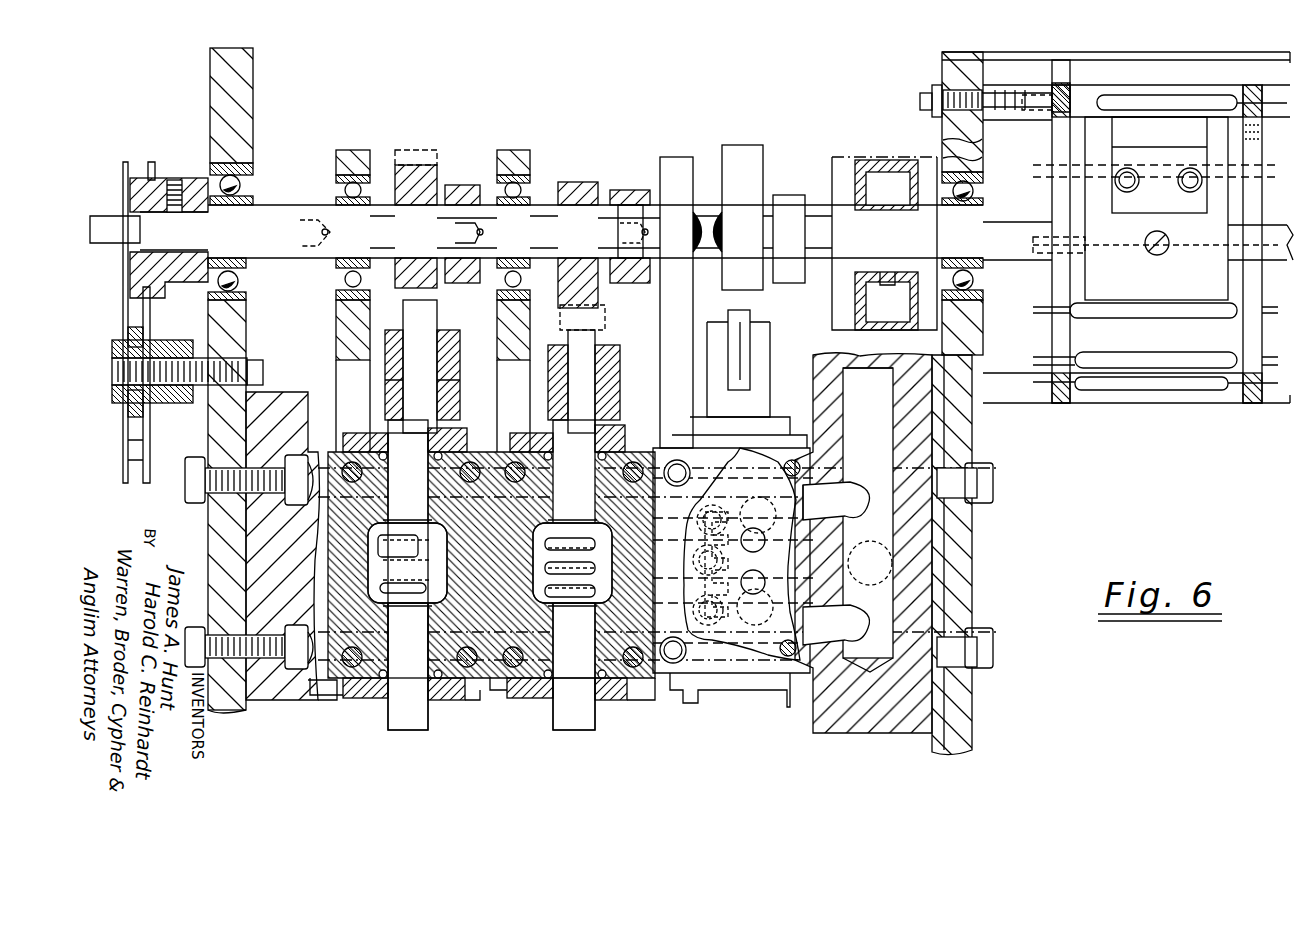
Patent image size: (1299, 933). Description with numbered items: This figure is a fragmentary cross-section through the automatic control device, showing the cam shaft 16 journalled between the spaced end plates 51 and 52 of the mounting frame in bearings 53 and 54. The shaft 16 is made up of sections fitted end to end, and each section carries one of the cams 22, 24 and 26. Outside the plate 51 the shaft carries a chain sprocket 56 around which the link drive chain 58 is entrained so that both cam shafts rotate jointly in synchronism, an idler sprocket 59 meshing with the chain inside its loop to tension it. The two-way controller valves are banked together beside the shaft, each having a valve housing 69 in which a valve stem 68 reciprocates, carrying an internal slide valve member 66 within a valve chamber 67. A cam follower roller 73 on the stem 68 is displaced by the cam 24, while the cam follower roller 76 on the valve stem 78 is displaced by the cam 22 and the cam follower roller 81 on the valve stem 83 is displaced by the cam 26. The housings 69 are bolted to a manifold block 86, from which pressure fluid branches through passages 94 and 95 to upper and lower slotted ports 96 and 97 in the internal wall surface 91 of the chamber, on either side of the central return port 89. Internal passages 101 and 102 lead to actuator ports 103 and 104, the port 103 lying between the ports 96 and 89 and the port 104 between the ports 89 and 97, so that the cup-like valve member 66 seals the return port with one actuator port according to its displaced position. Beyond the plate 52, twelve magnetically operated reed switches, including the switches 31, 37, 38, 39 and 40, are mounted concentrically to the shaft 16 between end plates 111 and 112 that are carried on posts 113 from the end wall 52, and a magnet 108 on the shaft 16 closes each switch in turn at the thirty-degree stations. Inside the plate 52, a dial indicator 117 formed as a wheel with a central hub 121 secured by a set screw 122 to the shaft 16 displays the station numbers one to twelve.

The cam shaft 16 is at (296, 202).
The cam 22 is at (425, 185).
The cam 24 is at (575, 182).
The cam 26 is at (755, 182).
The magnetic reed switch 31 is at (1140, 95).
The magnetic reed switch 37 is at (1200, 395).
The magnetic reed switch 38 is at (1153, 352).
The magnetic reed switch 39 is at (1110, 318).
The magnetic reed switch 40 is at (1150, 258).
The end plate 51 is at (210, 68).
The end plate 52 is at (945, 78).
The bearing 53 is at (243, 185).
The bearing 54 is at (975, 192).
The chain sprocket 56 is at (163, 178).
The link drive chain 58 is at (122, 466).
The idler sprocket 59 is at (112, 392).
The slide valve member 66 is at (405, 535).
The valve chamber 67 is at (425, 608).
The valve stem 68 is at (578, 705).
The valve housing 69 is at (475, 700).
The cam follower roller 73 is at (585, 335).
The cam follower roller 76 is at (420, 305).
The valve stem 78 is at (388, 423).
The cam follower roller 81 is at (742, 312).
The valve stem 83 is at (710, 428).
The manifold block 86 is at (870, 745).
The return port 89 is at (700, 557).
The internal wall surface 91 is at (733, 560).
The fluid passage 94 is at (872, 506).
The fluid passage 95 is at (872, 625).
The pressure port 96 is at (577, 520).
The pressure port 97 is at (578, 630).
The internal passage 101 is at (756, 532).
The internal passage 102 is at (752, 594).
The actuator port 103 is at (700, 530).
The actuator port 104 is at (700, 588).
The magnet 108 is at (1195, 138).
The end plate 111 is at (1052, 337).
The end plate 112 is at (1246, 329).
The post 113 is at (1203, 85).
The dial indicator 117 is at (855, 188).
The central hub 121 is at (903, 200).
The set screw 122 is at (880, 286).